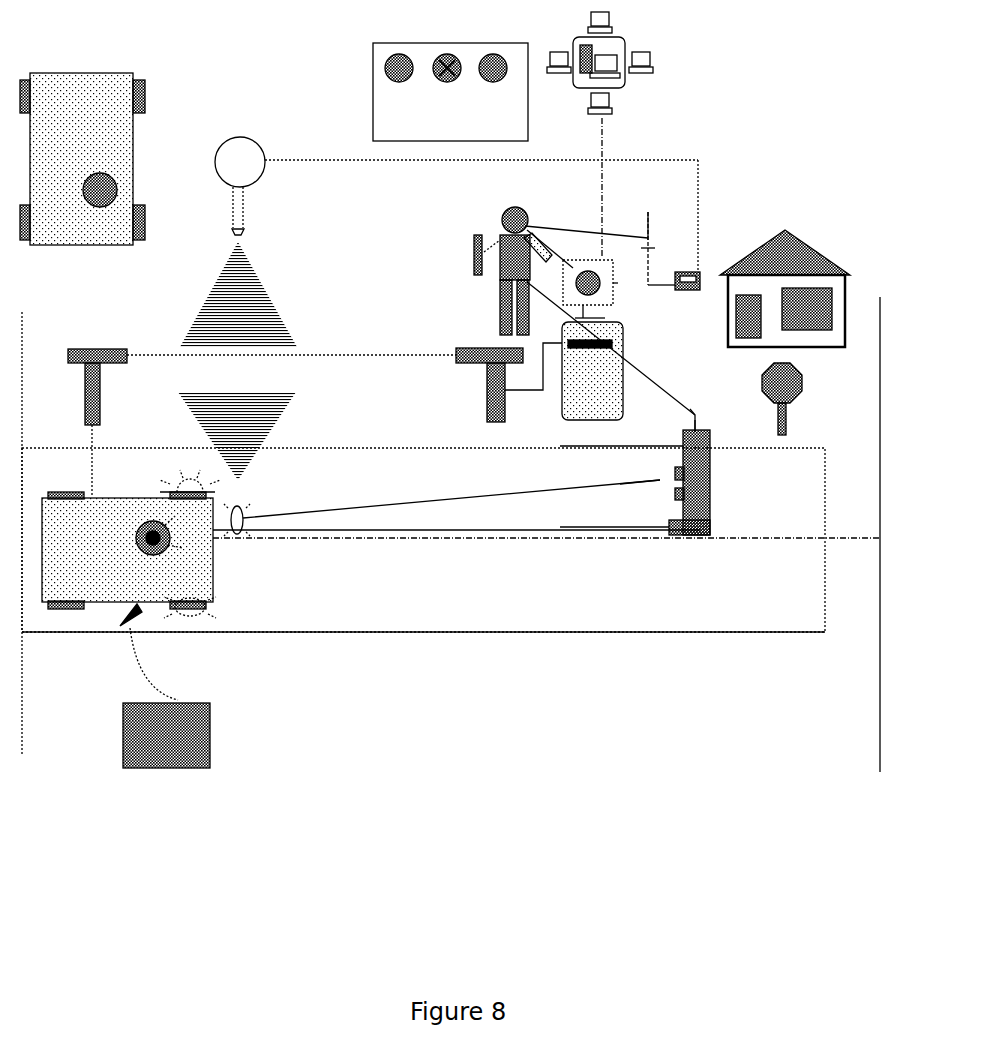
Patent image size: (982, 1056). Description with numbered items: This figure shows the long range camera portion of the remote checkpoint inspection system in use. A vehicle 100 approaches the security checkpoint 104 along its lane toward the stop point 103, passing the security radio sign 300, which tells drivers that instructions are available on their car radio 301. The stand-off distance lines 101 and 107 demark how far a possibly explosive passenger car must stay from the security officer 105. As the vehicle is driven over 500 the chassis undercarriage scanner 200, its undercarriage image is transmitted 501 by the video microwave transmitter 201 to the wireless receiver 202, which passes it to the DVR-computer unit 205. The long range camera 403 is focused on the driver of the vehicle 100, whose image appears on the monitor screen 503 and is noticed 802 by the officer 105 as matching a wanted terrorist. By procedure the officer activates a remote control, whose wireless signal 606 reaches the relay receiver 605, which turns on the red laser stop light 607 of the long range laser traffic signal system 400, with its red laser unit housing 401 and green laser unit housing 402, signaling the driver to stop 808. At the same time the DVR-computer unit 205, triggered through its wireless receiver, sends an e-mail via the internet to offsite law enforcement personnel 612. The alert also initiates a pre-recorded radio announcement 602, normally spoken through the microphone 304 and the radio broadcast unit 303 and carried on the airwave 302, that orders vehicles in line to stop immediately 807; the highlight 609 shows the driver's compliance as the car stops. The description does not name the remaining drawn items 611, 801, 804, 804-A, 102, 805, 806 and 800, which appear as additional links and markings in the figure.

The vehicle 100 is at (127, 550).
The car radio 301 is at (110, 159).
The security radio sign 300 is at (456, 190).
The pre-recorded radio announcement 602 is at (237, 361).
The video microwave transmitter 201 is at (291, 336).
The stand-off distance line 101 is at (82, 422).
The wireless receiver 202 is at (504, 369).
The image transmission 501 is at (423, 496).
The law enforcement personnel 612 is at (624, 63).
The network link 611 is at (583, 188).
The security officer 105 is at (503, 267).
The handheld device 804 is at (472, 260).
The communication link 801 is at (586, 221).
The match notice 802 is at (570, 274).
The monitor screen 503 is at (628, 282).
The microphone 304 is at (645, 248).
The airwave 302 is at (675, 227).
The radio broadcast unit 303 is at (688, 290).
The security checkpoint 104 is at (785, 274).
The DVR-computer unit 205 is at (592, 371).
The control link 804-A is at (611, 357).
The wireless signal 606 is at (700, 401).
The relay receiver 605 is at (677, 420).
The long range laser traffic signal system 400 is at (710, 482).
The red laser unit housing 401 is at (621, 455).
The green laser unit housing 402 is at (614, 513).
The long range camera 403 is at (706, 528).
The stop point 103 is at (803, 399).
The driver compliance stop 609 is at (203, 484).
The stop signal 808 is at (247, 515).
The path of travel 102 is at (451, 499).
The red laser stop light 607 is at (621, 495).
The vehicle sensor 805 is at (180, 518).
The vehicle unit 806 is at (186, 548).
The vehicles-in-line stop 807 is at (203, 609).
The drive-over 500 is at (176, 652).
The chassis undercarriage scanner 200 is at (166, 760).
The inspection area 800 is at (423, 659).
The stand-off distance line 107 is at (451, 534).